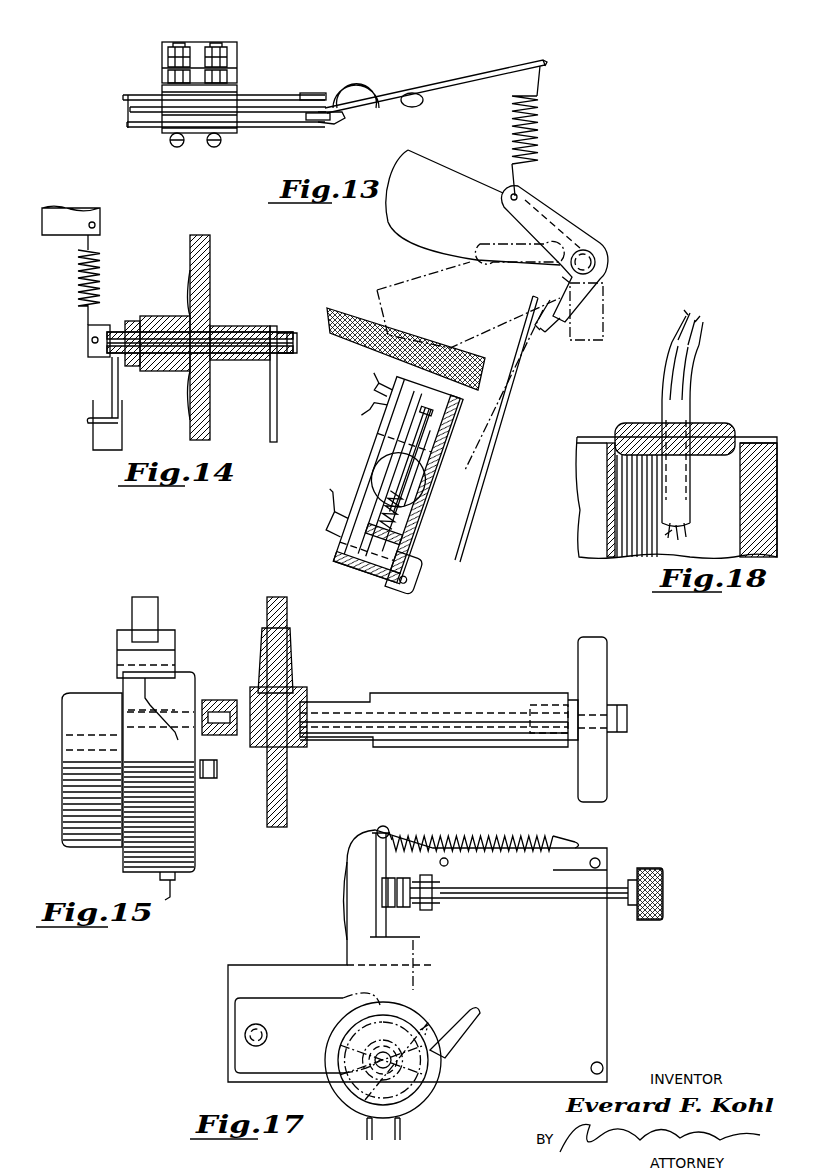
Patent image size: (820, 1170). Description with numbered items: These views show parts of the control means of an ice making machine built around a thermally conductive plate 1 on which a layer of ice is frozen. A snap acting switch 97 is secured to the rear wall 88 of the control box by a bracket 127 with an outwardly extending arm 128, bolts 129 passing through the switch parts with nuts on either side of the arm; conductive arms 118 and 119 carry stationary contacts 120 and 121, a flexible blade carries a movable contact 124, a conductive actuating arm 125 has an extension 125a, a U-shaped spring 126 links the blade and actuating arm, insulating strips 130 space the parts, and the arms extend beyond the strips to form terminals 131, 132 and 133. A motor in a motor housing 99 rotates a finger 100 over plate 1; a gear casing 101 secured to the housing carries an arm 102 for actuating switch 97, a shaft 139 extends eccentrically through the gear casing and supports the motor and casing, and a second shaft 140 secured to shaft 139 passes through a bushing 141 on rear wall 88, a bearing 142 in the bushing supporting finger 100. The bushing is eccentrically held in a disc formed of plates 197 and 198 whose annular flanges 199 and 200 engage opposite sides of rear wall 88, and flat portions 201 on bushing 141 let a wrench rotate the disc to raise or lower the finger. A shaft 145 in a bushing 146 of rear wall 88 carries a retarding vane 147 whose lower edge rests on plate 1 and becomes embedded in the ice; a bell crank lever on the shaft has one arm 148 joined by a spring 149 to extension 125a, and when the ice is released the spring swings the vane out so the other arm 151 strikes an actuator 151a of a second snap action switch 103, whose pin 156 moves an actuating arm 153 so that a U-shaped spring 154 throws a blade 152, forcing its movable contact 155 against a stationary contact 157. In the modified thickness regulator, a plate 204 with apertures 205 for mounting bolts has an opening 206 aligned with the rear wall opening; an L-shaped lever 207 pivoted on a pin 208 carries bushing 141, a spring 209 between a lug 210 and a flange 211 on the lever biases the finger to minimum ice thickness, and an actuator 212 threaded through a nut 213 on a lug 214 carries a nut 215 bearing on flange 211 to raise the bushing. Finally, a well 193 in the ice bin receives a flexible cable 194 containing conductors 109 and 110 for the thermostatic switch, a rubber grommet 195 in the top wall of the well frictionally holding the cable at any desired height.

In FIG. 13, the plate 1 is at (350, 290).
In FIG. 14, the rear wall 88 is at (207, 268).
In FIG. 15, the rear wall 88 is at (268, 818).
In FIG. 13, the switch 97 is at (116, 141).
In FIG. 15, the motor housing 99 is at (75, 693).
In FIG. 17, the motor housing 99 is at (416, 1094).
In FIG. 15, the finger 100 is at (596, 682).
In FIG. 17, the finger 100 is at (430, 988).
In FIG. 15, the gear casing 101 is at (122, 860).
In FIG. 17, the gear casing 101 is at (412, 1118).
In FIG. 15, the arm 102 is at (142, 692).
In FIG. 17, the arm 102 is at (480, 1018).
In FIG. 13, the second switch 103 is at (350, 467).
In FIG. 18, the conductor 109 is at (688, 335).
In FIG. 18, the conductor 110 is at (700, 335).
In FIG. 13, the conductive arm 118 is at (254, 95).
In FIG. 13, the conductive arm 119 is at (250, 133).
In FIG. 13, the stationary contact 120 is at (303, 93).
In FIG. 13, the stationary contact 121 is at (314, 120).
In FIG. 13, the movable contact 124 is at (329, 124).
In FIG. 13, the actuating arm 125 is at (391, 92).
In FIG. 13, the extension 125a is at (482, 77).
In FIG. 14, the extension 125a is at (100, 213).
In FIG. 13, the U-shaped spring 126 is at (354, 73).
In FIG. 15, the U-shaped spring 126 is at (141, 597).
In FIG. 13, the bracket 127 is at (237, 45).
In FIG. 13, the arm 128 is at (168, 75).
In FIG. 13, the bolts 129 is at (180, 46).
In FIG. 13, the insulating strips 130 is at (158, 110).
In FIG. 13, the terminal 131 is at (128, 96).
In FIG. 13, the terminal 132 is at (130, 108).
In FIG. 13, the terminal 133 is at (127, 124).
In FIG. 15, the shaft 139 is at (220, 700).
In FIG. 15, the second shaft 140 is at (440, 693).
In FIG. 15, the bushing 141 is at (460, 748).
In FIG. 17, the bushing 141 is at (372, 1052).
In FIG. 15, the bearing 142 is at (540, 705).
In FIG. 14, the shaft 145 is at (222, 331).
In FIG. 14, the bushing 146 is at (250, 326).
In FIG. 13, the retarding element 147 is at (453, 177).
In FIG. 14, the retarding element 147 is at (270, 422).
In FIG. 13, the arm 148 is at (547, 200).
In FIG. 14, the arm 148 is at (100, 325).
In FIG. 13, the spring 149 is at (538, 114).
In FIG. 14, the spring 149 is at (78, 281).
In FIG. 13, the arm 151 is at (603, 296).
In FIG. 14, the arm 151 is at (112, 385).
In FIG. 13, the actuator 151a is at (510, 378).
In FIG. 13, the blade 152 is at (392, 440).
In FIG. 13, the actuating arm 153 is at (415, 512).
In FIG. 13, the U-shaped spring 154 is at (430, 490).
In FIG. 13, the movable contact 155 is at (387, 409).
In FIG. 13, the pin 156 is at (442, 564).
In FIG. 13, the stationary contact 157 is at (440, 448).
In FIG. 18, the well 193 is at (625, 545).
In FIG. 18, the flexible cable 194 is at (690, 396).
In FIG. 18, the grommet 195 is at (715, 424).
In FIG. 15, the plate 197 is at (262, 692).
In FIG. 15, the plate 198 is at (293, 686).
In FIG. 15, the annular flange 199 is at (268, 628).
In FIG. 15, the annular flange 200 is at (290, 630).
In FIG. 15, the flat portions 201 is at (360, 696).
In FIG. 17, the plate 204 is at (598, 973).
In FIG. 17, the apertures 205 is at (602, 866).
In FIG. 17, the opening 206 is at (352, 1006).
In FIG. 17, the L-shaped lever 207 is at (358, 929).
In FIG. 17, the pivot pin 208 is at (245, 1035).
In FIG. 17, the spring 209 is at (510, 836).
In FIG. 17, the lug 210 is at (590, 848).
In FIG. 17, the flange 211 is at (360, 827).
In FIG. 17, the actuator 212 is at (535, 900).
In FIG. 17, the nut 213 is at (420, 878).
In FIG. 17, the lug 214 is at (434, 906).
In FIG. 17, the nut 215 is at (376, 912).